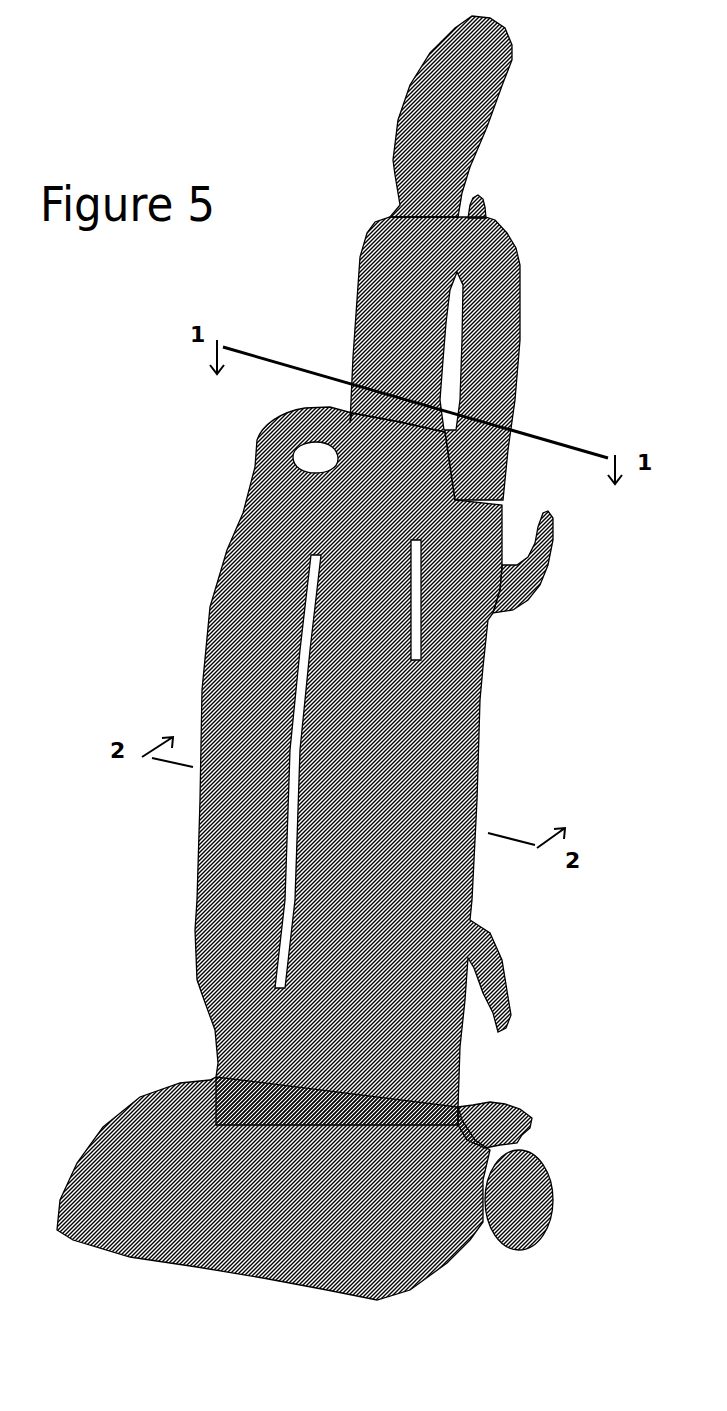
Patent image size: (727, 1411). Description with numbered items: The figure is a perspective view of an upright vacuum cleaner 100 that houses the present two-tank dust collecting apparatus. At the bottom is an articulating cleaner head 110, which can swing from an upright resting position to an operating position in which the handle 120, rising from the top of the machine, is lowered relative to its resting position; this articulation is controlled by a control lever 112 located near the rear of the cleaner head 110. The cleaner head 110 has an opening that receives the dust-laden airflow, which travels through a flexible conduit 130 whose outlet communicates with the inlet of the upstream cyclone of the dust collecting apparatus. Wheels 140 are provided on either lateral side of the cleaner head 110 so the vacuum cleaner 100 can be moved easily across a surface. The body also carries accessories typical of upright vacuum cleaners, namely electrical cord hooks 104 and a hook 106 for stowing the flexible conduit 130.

The upright vacuum cleaner 100 is at (338, 658).
The electrical cord hooks 104 is at (548, 563).
The hook for the flexible conduit 106 is at (478, 212).
The articulating cleaner head 110 is at (130, 1110).
The control lever 112 is at (518, 1110).
The handle 120 is at (407, 93).
The flexible conduit 130 is at (522, 322).
The wheels 140 is at (550, 1209).